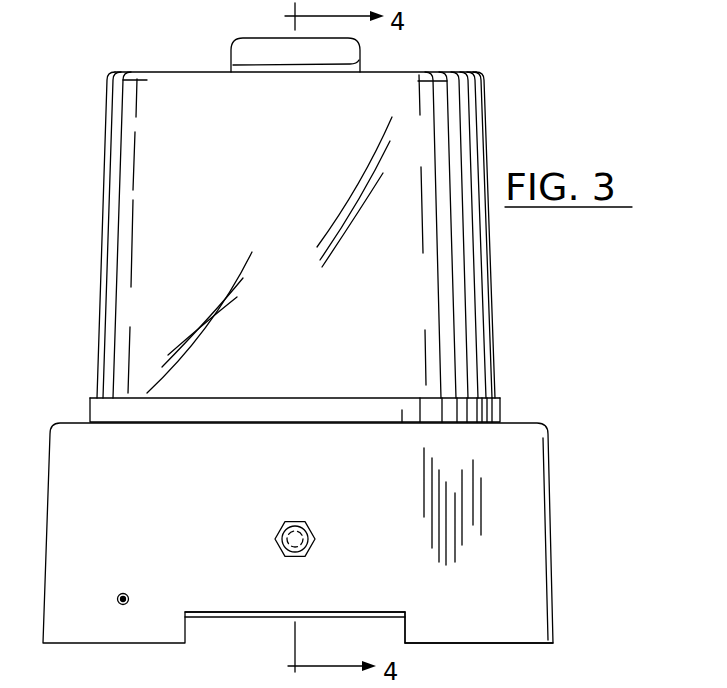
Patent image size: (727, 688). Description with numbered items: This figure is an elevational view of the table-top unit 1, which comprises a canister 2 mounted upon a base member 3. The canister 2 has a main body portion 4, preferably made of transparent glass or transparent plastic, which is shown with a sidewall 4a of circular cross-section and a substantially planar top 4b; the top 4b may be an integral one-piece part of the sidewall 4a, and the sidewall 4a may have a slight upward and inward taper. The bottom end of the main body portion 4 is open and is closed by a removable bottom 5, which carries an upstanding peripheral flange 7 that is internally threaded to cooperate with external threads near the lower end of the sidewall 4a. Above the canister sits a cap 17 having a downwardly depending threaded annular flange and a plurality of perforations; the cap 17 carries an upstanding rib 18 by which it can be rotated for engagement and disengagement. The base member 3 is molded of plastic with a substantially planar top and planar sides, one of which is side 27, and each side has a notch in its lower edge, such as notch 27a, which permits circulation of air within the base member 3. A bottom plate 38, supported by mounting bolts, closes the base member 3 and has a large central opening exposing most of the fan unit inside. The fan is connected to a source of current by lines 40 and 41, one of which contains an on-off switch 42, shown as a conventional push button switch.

The unit 1 is at (492, 102).
The canister 2 is at (487, 130).
The base member 3 is at (556, 464).
The main body portion 4 is at (490, 232).
The sidewall 4a is at (490, 292).
The top 4b is at (350, 64).
The removable bottom 5 is at (502, 412).
The upstanding peripheral flange 7 is at (501, 400).
The cap 17 is at (445, 70).
The upstanding rib 18 is at (348, 50).
The side 27 is at (490, 621).
The notch 27a is at (405, 627).
The bottom plate 38 is at (205, 614).
The line 40 is at (117, 600).
The line 41 is at (129, 595).
The switch 42 is at (307, 534).